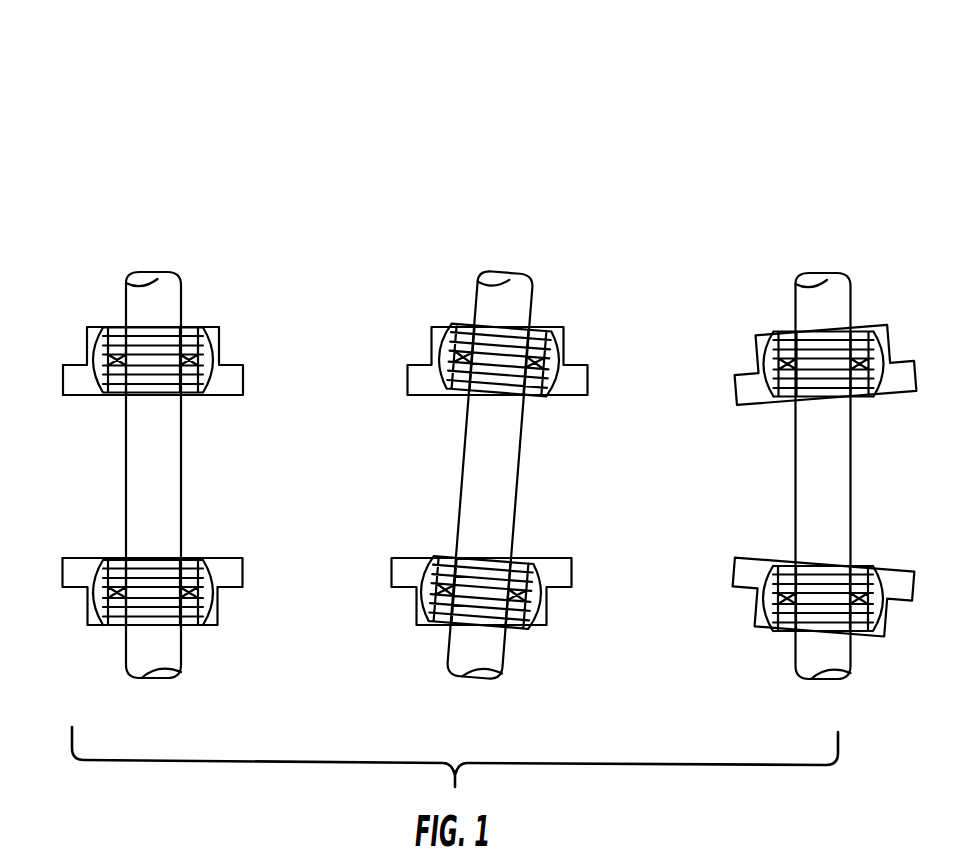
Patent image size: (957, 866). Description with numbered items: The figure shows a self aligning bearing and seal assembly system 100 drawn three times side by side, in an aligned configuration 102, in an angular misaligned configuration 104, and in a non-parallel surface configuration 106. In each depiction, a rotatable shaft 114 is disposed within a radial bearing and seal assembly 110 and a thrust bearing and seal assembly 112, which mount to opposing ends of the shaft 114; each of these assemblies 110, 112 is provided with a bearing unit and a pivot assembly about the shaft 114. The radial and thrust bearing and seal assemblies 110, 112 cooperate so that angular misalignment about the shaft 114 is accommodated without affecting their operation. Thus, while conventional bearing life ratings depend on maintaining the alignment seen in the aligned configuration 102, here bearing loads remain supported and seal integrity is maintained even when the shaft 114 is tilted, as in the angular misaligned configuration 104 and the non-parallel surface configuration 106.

The self aligning bearing and seal assembly system 100 is at (112, 78).
The aligned configuration 102 is at (116, 217).
The angular misaligned configuration 104 is at (456, 219).
The non-parallel surface configuration 106 is at (795, 218).
The radial bearing and seal assembly 110 is at (90, 336).
The thrust bearing and seal assembly 112 is at (72, 568).
The rotatable shaft 114 is at (126, 472).